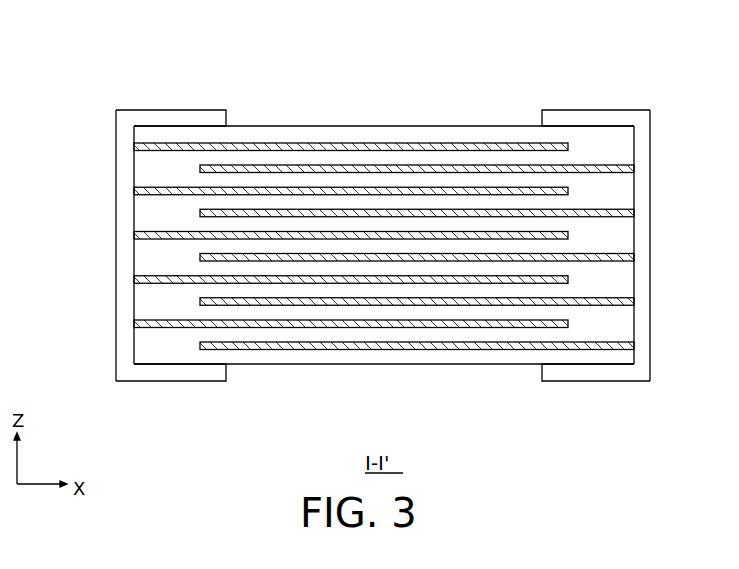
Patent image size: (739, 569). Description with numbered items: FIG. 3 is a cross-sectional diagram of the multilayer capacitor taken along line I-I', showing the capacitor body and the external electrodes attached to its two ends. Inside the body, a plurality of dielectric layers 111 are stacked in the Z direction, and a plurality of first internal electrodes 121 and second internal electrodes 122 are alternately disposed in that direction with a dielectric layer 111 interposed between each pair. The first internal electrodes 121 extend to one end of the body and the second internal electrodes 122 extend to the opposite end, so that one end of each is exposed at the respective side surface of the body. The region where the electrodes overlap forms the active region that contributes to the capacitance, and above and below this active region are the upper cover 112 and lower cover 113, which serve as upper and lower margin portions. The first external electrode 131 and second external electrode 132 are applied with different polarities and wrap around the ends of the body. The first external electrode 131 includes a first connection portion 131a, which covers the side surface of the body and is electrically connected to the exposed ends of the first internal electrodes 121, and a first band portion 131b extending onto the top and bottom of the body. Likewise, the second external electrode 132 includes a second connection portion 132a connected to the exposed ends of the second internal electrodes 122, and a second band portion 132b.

The dielectric layer 111 is at (448, 178).
The upper cover 112 is at (318, 137).
The lower cover 113 is at (412, 364).
The first internal electrode 121 is at (255, 148).
The second internal electrode 122 is at (505, 170).
The first external electrode 131 is at (144, 196).
The first connection portion 131a is at (127, 155).
The first band portion 131b is at (177, 117).
The second external electrode 132 is at (623, 196).
The second connection portion 132a is at (642, 155).
The second band portion 132b is at (596, 219).